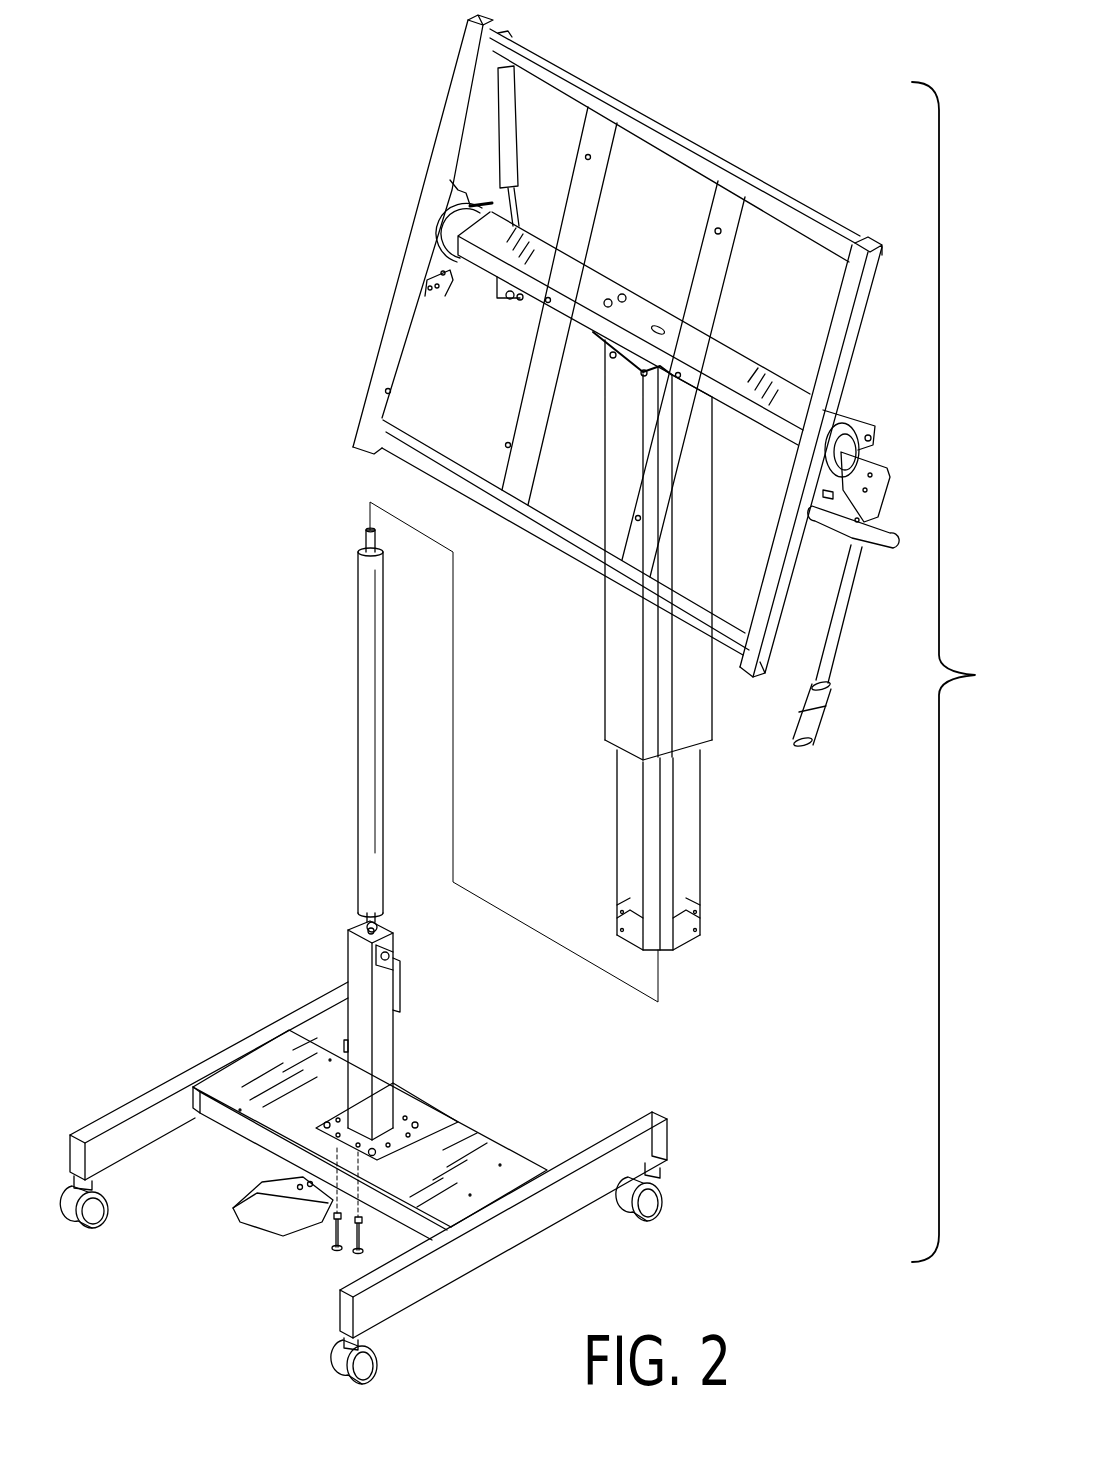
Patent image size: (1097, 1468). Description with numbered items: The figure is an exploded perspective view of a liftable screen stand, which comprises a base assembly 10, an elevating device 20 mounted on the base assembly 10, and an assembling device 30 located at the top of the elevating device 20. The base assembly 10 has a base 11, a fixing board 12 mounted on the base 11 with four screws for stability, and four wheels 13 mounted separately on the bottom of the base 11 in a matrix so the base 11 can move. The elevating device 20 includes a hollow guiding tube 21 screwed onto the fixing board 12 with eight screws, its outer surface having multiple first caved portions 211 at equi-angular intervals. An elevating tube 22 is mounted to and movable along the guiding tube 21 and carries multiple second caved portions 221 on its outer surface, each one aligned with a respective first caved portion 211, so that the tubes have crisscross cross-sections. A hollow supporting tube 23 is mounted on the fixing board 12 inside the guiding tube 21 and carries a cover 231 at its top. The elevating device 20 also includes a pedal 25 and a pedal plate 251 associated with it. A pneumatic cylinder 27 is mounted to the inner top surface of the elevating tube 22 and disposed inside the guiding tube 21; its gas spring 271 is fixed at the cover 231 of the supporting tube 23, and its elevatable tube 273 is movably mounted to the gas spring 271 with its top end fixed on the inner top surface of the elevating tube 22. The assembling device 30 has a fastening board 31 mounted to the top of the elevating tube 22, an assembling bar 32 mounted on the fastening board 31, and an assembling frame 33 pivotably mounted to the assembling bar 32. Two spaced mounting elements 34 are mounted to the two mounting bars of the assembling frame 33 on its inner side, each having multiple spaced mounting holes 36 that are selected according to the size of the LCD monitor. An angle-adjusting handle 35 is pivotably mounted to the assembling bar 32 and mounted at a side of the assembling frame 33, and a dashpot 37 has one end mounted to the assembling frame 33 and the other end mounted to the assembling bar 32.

The base assembly 10 is at (386, 1168).
The base 11 is at (489, 1163).
The fixing board 12 is at (400, 1114).
The wheels 13 is at (649, 1210).
The elevating device 20 is at (636, 641).
The guiding tube 21 is at (706, 850).
The first caved portions 211 is at (665, 857).
The elevating tube 22 is at (615, 560).
The second caved portions 221 is at (653, 728).
The supporting tube 23 is at (331, 1004).
The cover 231 is at (360, 923).
The pedal 25 is at (243, 1251).
The pedal plate 251 is at (267, 1214).
The pneumatic cylinder 27 is at (355, 731).
The gas spring 271 is at (380, 919).
The elevatable tube 273 is at (370, 710).
The assembling device 30 is at (643, 381).
The fastening board 31 is at (628, 356).
The assembling bar 32 is at (737, 375).
The assembling frame 33 is at (847, 356).
The mounting elements 34 is at (707, 265).
The angle-adjusting handle 35 is at (817, 700).
The mounting holes 36 is at (716, 230).
The dashpot 37 is at (507, 146).